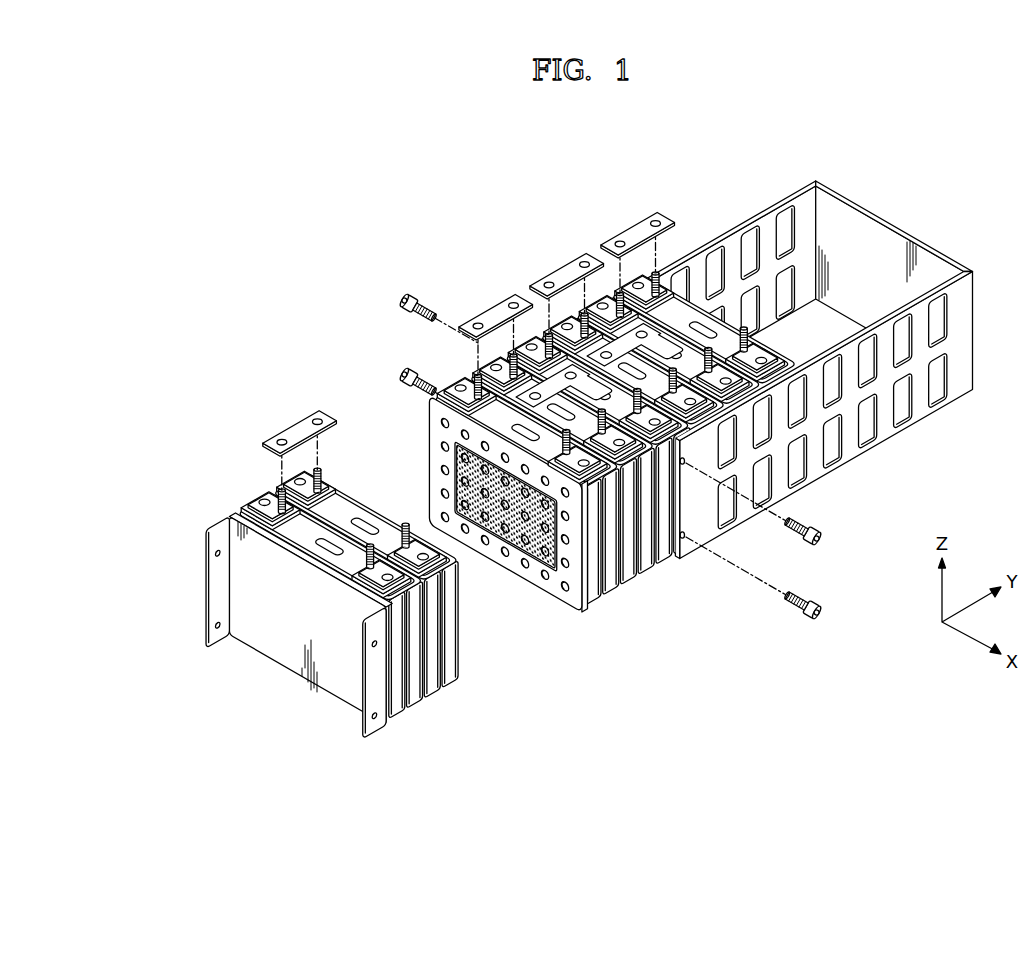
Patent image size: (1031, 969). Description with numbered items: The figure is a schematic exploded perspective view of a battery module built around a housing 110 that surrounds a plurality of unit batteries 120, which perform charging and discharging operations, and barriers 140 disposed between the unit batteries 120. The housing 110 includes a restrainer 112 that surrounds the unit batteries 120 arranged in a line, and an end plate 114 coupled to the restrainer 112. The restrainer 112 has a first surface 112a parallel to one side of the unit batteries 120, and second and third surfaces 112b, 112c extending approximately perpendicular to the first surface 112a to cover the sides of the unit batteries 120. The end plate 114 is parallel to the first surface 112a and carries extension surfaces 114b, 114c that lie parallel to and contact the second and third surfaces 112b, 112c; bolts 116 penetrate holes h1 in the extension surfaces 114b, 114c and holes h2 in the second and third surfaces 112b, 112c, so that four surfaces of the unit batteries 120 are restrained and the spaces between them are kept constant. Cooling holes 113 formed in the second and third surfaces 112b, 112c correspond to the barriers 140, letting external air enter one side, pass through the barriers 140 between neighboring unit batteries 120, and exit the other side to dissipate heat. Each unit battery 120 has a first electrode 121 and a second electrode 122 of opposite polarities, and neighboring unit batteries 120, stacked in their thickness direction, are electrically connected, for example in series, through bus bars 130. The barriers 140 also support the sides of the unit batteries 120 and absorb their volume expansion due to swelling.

The housing 110 is at (583, 462).
The restrainer 112 is at (776, 411).
The first surface 112a is at (896, 220).
The second surface 112b is at (737, 212).
The third surface 112c is at (852, 405).
The cooling holes 113 is at (939, 381).
The end plate 114 is at (355, 622).
The extension surface 114b is at (208, 597).
The extension surface 114c is at (333, 674).
The bolts 116 is at (813, 527).
The unit batteries 120 is at (512, 435).
The first electrodes 121 is at (318, 472).
The second electrodes 122 is at (405, 524).
The bus bars 130 is at (635, 217).
The barriers 140 is at (517, 579).
The holes h1 is at (370, 677).
The holes h2 is at (686, 540).